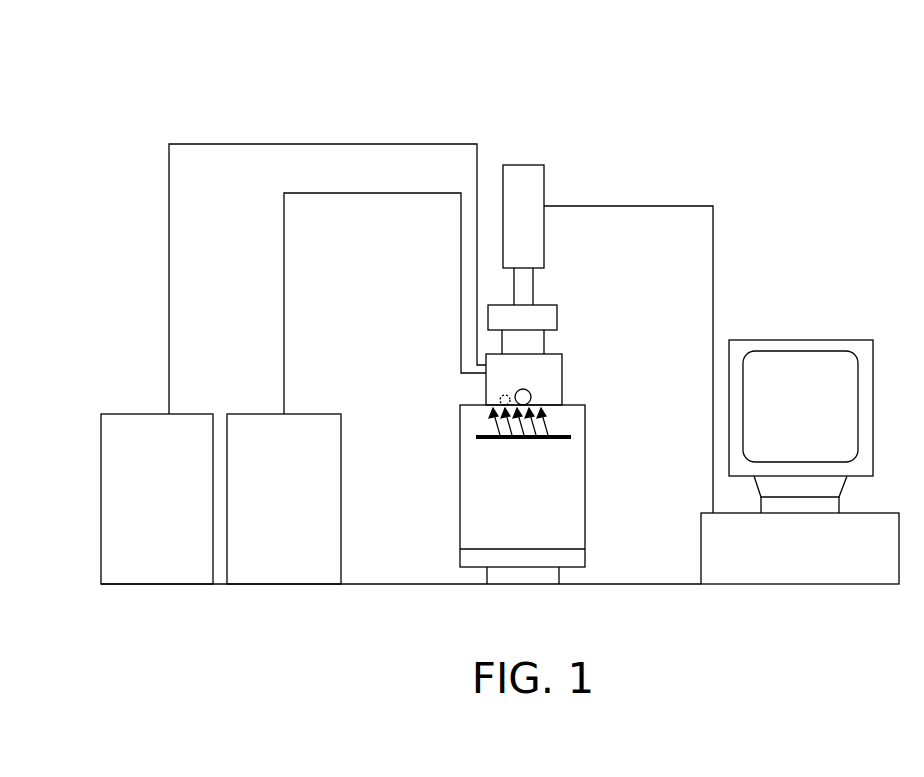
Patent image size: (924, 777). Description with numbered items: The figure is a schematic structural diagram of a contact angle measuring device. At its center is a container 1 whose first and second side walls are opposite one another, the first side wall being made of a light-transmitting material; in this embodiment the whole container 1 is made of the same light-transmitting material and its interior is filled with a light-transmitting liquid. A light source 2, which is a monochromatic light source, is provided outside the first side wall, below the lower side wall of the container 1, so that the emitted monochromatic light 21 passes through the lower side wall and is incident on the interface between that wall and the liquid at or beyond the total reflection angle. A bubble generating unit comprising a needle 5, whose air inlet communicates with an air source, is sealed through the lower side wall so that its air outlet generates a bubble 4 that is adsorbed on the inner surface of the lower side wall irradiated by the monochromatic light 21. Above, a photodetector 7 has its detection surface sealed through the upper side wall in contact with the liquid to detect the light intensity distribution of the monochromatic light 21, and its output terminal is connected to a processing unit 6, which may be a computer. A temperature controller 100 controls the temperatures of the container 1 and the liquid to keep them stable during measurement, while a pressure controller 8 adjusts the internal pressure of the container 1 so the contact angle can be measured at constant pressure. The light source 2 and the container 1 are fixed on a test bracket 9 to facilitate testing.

The temperature controller 100 is at (143, 414).
The pressure controller 8 is at (303, 442).
The photodetector 7 is at (523, 292).
The container 1 is at (562, 370).
The bubble 4 is at (531, 395).
The needle 5 is at (498, 400).
The light source 2 is at (515, 437).
The monochromatic light 21 is at (558, 437).
The test bracket 9 is at (460, 487).
The processing unit 6 is at (801, 462).